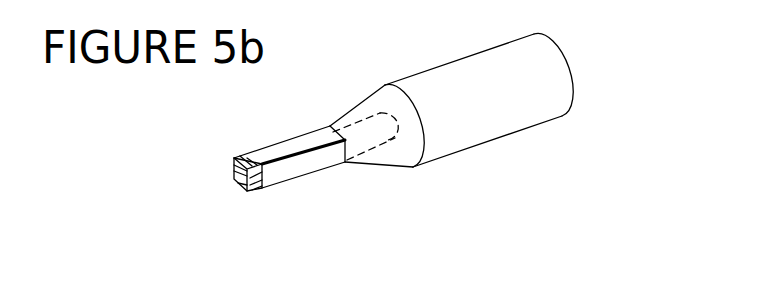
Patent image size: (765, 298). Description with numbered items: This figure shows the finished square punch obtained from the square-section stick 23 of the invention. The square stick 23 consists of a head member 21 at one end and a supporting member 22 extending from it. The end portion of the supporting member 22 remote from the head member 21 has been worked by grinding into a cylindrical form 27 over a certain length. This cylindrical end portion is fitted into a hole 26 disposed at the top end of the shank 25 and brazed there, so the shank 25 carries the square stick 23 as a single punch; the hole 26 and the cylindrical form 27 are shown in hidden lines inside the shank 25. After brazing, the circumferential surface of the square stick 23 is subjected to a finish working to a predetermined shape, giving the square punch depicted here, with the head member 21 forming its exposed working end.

The head member 21 is at (243, 173).
The supporting member 22 is at (313, 165).
The square stick 23 is at (273, 130).
The shank 25 is at (517, 118).
The hole 26 is at (353, 122).
The cylindrical form 27 is at (372, 142).